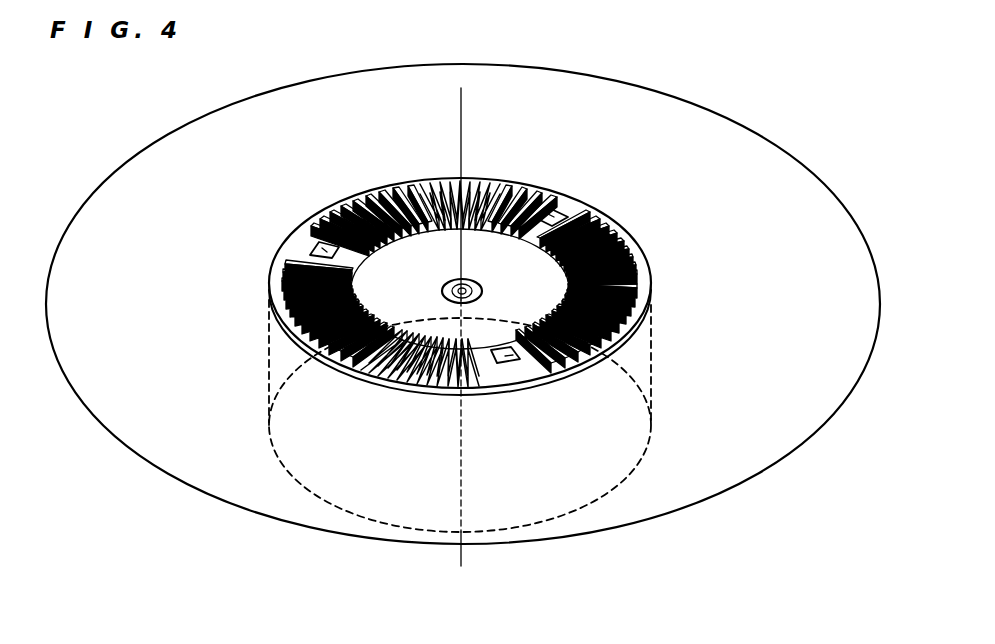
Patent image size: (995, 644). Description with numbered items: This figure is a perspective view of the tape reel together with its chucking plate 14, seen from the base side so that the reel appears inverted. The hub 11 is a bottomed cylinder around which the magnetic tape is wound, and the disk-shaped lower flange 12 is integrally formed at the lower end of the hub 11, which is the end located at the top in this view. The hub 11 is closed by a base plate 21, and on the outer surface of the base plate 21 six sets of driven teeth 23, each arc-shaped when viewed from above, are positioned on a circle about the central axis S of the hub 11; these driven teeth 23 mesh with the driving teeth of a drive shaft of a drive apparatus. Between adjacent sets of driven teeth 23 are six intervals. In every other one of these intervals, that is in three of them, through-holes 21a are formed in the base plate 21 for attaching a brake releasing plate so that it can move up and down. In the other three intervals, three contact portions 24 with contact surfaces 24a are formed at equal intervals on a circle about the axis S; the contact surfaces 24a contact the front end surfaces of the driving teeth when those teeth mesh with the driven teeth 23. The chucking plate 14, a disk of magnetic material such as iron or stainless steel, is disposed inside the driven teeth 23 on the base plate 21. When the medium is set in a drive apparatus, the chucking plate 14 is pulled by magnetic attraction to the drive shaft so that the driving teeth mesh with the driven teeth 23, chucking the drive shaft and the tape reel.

The hub 11 is at (268, 362).
The lower flange 12 is at (745, 160).
The chucking plate 14 is at (420, 242).
The base plate 21 is at (483, 172).
The through-holes 21a is at (565, 218).
The driven teeth 23 is at (503, 182).
The contact portions 24 is at (407, 180).
The contact surfaces 24a is at (424, 200).
The axis S is at (464, 95).